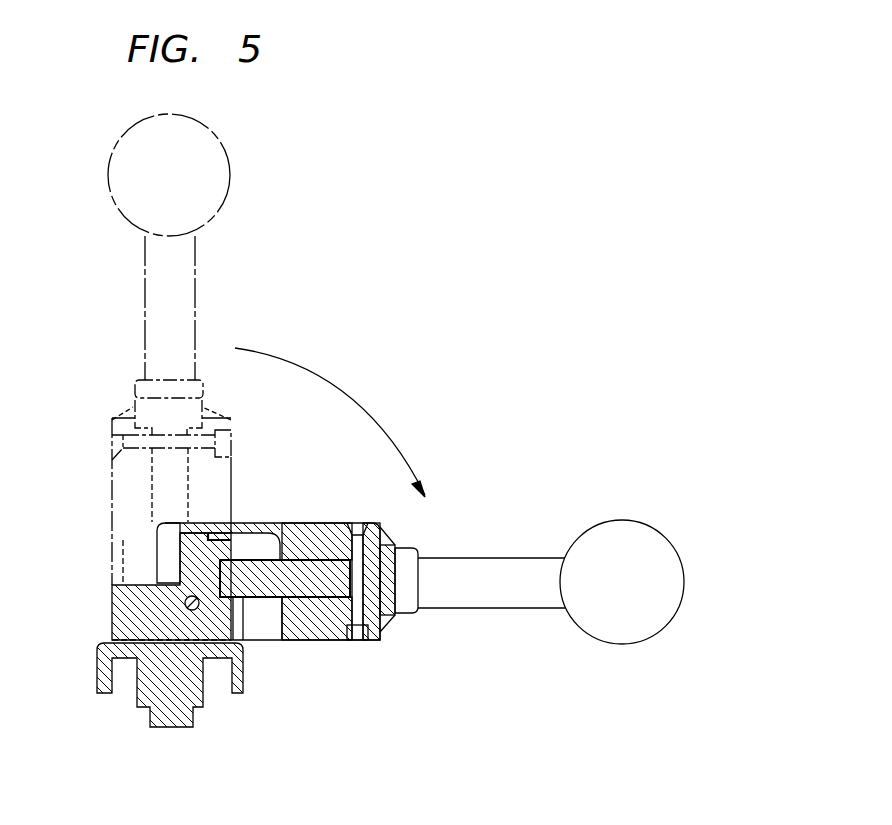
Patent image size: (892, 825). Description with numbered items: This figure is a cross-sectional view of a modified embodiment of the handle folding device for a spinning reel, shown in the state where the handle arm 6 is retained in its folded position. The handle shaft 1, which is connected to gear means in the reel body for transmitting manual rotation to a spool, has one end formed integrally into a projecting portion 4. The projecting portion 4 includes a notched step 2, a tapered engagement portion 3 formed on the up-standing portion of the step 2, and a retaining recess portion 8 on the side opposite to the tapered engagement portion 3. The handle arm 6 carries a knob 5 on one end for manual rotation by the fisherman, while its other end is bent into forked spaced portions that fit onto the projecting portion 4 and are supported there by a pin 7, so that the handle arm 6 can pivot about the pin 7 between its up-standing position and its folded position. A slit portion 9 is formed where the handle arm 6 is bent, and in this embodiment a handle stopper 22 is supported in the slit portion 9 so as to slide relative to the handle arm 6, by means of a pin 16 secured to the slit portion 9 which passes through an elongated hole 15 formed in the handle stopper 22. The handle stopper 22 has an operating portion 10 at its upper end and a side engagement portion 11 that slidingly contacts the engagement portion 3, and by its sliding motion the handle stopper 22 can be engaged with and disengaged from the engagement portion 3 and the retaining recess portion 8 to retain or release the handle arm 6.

The handle shaft 1 is at (180, 710).
The notched step 2 is at (142, 583).
The tapered engagement portion 3 is at (175, 545).
The projecting portion 4 is at (205, 522).
The knob 5 is at (590, 538).
The handle arm 6 is at (505, 572).
The pin 7 is at (178, 612).
The retaining recess portion 8 is at (248, 640).
The slit portion 9 is at (308, 530).
The operating portion 10 is at (420, 573).
The engagement portion 11 is at (283, 615).
The elongated hole 15 is at (388, 618).
The pin 16 is at (365, 525).
The handle stopper 22 is at (322, 620).